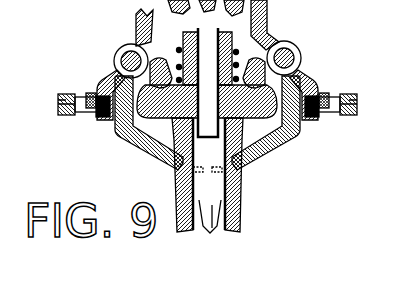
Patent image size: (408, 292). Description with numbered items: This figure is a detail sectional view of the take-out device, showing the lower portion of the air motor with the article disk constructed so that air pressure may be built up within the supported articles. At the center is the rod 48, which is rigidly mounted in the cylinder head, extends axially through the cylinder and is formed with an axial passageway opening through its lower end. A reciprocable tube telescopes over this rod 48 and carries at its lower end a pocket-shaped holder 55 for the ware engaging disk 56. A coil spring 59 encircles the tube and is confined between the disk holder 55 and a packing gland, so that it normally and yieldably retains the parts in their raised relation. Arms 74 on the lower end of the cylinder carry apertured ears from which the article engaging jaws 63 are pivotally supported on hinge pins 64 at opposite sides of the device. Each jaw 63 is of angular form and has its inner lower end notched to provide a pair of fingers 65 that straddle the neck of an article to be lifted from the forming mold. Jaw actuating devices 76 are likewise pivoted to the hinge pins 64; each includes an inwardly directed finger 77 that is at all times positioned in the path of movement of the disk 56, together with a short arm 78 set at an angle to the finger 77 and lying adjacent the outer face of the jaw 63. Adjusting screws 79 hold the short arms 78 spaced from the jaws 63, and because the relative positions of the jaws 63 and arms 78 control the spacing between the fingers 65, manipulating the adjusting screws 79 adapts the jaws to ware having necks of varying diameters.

The rod 48 is at (198, 26).
The holder 55 is at (156, 108).
The ware engaging disk 56 is at (247, 113).
The coil spring 59 is at (236, 49).
The article engaging jaws 63 is at (140, 158).
The hinge pin 64 is at (115, 54).
The fingers 65 is at (180, 170).
The arms 74 is at (137, 24).
The jaw actuating devices 76 is at (100, 78).
The finger 77 is at (168, 66).
The short arms 78 is at (100, 127).
The adjusting screws 79 is at (63, 96).